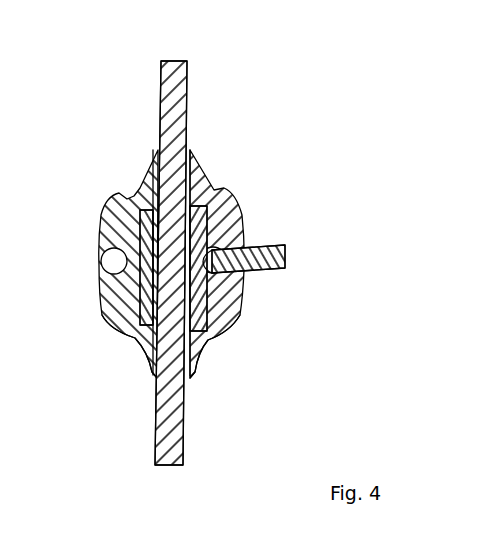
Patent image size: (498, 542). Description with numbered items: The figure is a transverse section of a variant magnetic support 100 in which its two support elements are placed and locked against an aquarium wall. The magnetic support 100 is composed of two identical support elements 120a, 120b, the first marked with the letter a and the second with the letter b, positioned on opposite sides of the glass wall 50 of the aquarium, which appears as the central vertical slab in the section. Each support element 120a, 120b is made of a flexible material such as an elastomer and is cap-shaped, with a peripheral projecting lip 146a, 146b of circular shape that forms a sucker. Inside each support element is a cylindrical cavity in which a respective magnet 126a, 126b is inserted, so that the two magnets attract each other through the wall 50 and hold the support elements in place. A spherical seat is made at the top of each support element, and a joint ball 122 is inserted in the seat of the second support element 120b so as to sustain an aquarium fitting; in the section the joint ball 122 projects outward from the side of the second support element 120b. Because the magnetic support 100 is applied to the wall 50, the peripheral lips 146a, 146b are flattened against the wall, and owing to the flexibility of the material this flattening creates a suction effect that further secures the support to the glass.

The magnetic support 100 is at (304, 60).
The wall 50 is at (160, 93).
The first support element 120a is at (130, 187).
The second support element 120b is at (211, 172).
The joint ball 122 is at (282, 250).
The magnet 126a is at (135, 325).
The magnet 126b is at (227, 330).
The peripheral projecting lip 146a is at (150, 365).
The peripheral projecting lip 146b is at (190, 363).